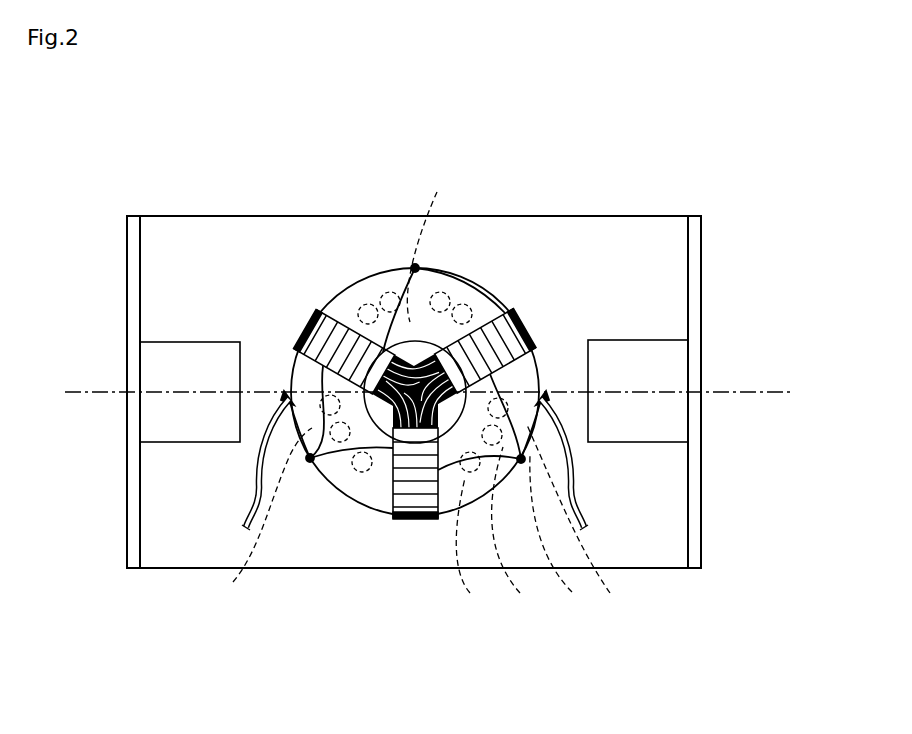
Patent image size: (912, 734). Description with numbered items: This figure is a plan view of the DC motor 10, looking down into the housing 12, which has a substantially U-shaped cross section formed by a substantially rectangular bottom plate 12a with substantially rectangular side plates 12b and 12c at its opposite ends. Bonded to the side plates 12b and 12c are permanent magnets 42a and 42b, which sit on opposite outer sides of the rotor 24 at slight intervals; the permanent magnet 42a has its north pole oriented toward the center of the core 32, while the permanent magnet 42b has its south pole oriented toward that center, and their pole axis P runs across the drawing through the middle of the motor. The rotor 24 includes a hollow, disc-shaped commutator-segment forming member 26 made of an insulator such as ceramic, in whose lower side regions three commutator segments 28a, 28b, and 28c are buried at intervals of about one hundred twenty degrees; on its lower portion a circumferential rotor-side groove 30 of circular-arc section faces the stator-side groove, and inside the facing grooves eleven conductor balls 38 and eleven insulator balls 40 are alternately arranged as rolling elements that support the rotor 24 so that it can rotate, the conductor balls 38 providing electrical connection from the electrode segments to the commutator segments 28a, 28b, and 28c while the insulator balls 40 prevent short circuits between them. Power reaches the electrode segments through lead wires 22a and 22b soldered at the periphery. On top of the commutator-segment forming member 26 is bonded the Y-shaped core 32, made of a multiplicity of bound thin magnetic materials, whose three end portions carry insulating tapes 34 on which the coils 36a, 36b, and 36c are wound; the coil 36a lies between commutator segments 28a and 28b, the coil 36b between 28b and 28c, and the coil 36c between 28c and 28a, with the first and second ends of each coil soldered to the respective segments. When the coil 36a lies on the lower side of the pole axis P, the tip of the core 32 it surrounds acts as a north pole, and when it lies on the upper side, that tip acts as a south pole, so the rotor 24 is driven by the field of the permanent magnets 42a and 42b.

The DC motor 10 is at (178, 159).
The housing 12 is at (410, 369).
The bottom plate 12a is at (626, 241).
The side plate 12b is at (129, 257).
The side plate 12c is at (691, 255).
The lead wire 22a is at (252, 502).
The lead wire 22b is at (588, 512).
The rotor 24 is at (385, 262).
The commutator-segment forming member 26 is at (463, 283).
The commutator segment 28a is at (588, 519).
The commutator segment 28b is at (259, 521).
The commutator segment 28c is at (433, 246).
The rotor-side groove 30 is at (472, 546).
The core 32 is at (373, 423).
The insulating tape 34 is at (322, 314).
The coil 36a is at (437, 470).
The coil 36b is at (344, 318).
The coil 36c is at (520, 282).
The conductor ball 38 is at (516, 530).
The insulator ball 40 is at (562, 534).
The permanent magnet 42a is at (150, 424).
The permanent magnet 42b is at (677, 423).
The pole axis P is at (756, 391).